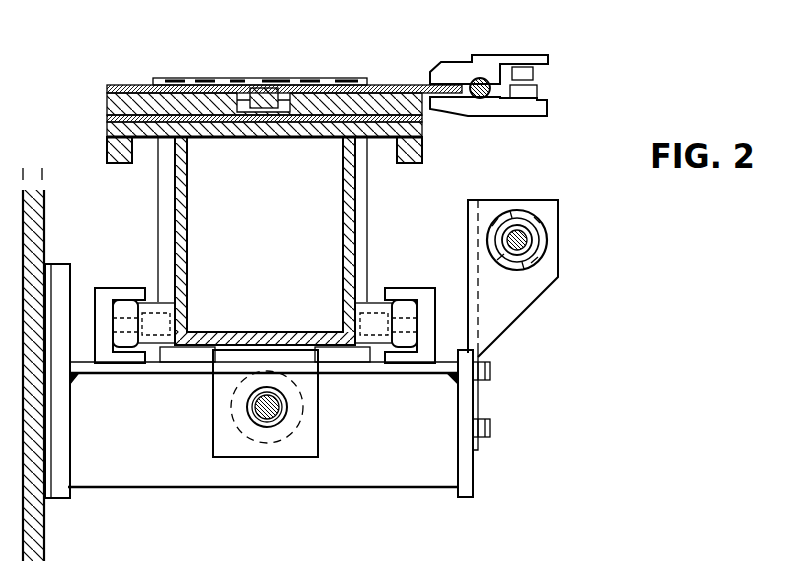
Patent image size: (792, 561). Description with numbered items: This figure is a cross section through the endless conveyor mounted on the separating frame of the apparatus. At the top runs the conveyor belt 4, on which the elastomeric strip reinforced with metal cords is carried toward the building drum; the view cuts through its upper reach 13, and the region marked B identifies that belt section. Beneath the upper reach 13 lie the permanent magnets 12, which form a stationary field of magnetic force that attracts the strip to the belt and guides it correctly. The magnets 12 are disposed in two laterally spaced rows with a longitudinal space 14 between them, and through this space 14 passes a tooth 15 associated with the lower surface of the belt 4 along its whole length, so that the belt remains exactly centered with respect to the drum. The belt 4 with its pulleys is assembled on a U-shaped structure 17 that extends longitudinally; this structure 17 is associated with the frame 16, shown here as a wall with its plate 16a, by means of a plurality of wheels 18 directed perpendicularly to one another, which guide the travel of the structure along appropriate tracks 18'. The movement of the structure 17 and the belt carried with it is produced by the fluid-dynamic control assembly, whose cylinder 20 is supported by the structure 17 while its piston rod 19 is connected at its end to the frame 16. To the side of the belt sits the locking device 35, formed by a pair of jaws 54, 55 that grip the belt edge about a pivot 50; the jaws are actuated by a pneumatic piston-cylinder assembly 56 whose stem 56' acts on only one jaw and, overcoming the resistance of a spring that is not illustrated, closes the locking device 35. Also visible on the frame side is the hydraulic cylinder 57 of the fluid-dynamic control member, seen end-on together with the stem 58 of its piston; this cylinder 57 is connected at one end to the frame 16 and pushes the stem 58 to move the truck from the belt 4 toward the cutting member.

The conveyor belt 4 is at (384, 82).
The label strip B is at (228, 80).
The permanent magnets 12 is at (115, 103).
The upper reach 13 is at (135, 85).
The longitudinal space 14 is at (260, 124).
The tooth 15 is at (268, 86).
The frame 16 is at (46, 220).
The frame plate 16a is at (473, 462).
The U-shaped structure 17 is at (176, 190).
The wheels 18 is at (254, 288).
The tracks 18' is at (328, 325).
The piston rod 19 is at (250, 408).
The cylinder 20 is at (305, 418).
The locking device 35 is at (552, 48).
The pivot pin 50 is at (483, 98).
The jaw 54 is at (453, 64).
The jaw 55 is at (450, 110).
The pneumatic piston-cylinder assembly 56 is at (559, 99).
The stem 56' is at (565, 67).
The hydraulic cylinder 57 is at (548, 222).
The stem 58 is at (530, 240).